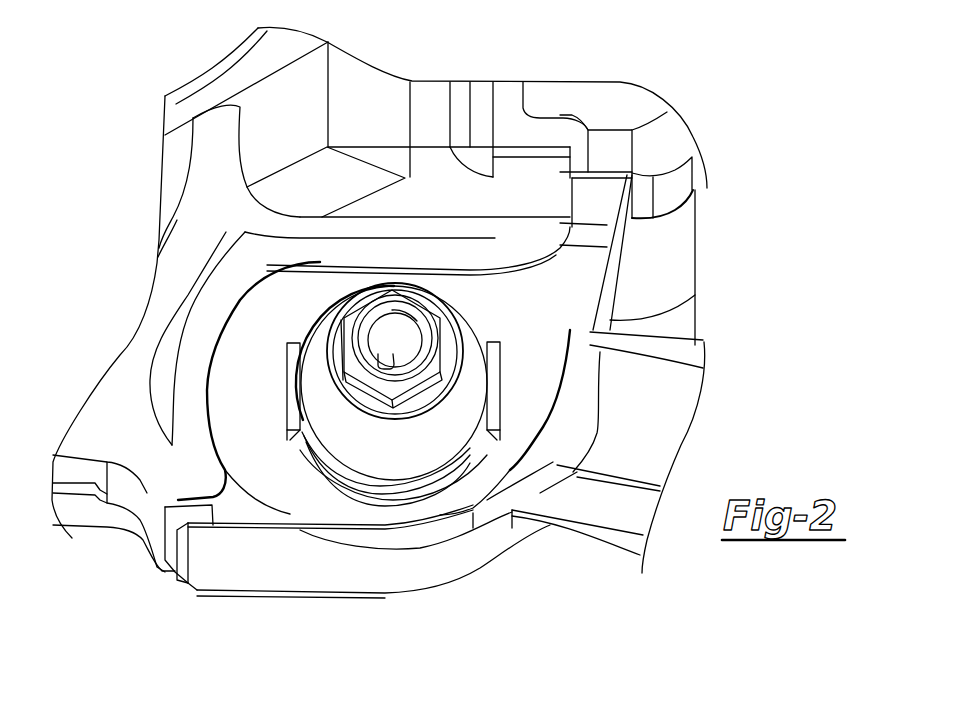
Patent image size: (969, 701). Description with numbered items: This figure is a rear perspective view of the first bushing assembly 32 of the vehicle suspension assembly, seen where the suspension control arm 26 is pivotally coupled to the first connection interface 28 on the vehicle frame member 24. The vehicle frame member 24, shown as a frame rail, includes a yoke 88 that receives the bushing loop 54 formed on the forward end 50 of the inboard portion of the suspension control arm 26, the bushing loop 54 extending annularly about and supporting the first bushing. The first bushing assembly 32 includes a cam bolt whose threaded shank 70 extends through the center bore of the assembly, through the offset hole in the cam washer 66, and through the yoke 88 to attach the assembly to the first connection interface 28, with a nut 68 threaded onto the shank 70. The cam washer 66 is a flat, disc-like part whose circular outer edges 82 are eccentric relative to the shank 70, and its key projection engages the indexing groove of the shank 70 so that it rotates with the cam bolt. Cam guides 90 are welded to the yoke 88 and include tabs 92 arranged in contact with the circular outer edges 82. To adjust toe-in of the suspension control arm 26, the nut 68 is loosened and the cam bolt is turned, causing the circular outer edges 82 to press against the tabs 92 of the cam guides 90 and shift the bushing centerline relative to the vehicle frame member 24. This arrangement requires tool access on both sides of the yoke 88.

The vehicle frame member 24 is at (293, 118).
The suspension control arm 26 is at (652, 512).
The first connection interface 28 is at (667, 260).
The first bushing assembly 32 is at (427, 598).
The forward end 50 is at (663, 403).
The bushing loop 54 is at (403, 543).
The cam washer 66 is at (433, 447).
The nut 68 is at (398, 333).
The shank 70 is at (422, 318).
The circular outer edges 82 is at (337, 467).
The yoke 88 is at (293, 510).
The cam guides 90 is at (318, 330).
The tabs 92 is at (290, 382).